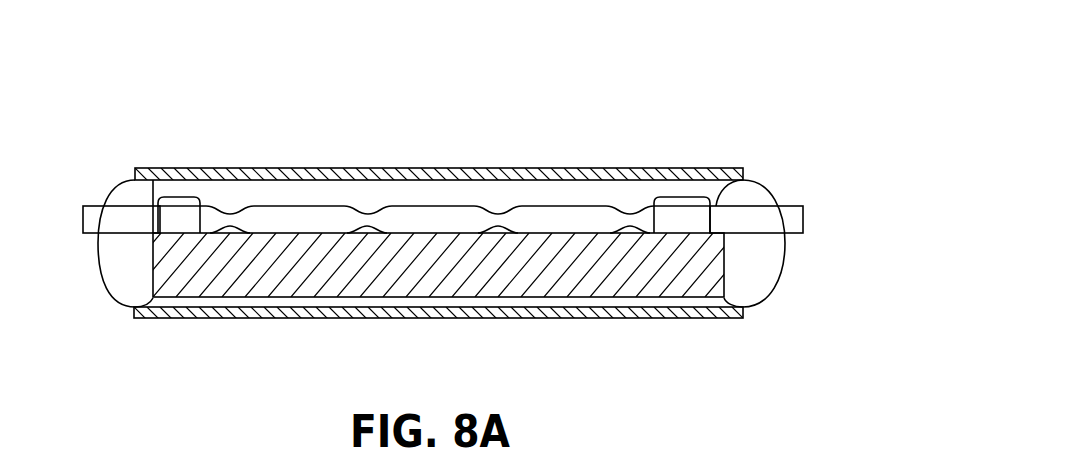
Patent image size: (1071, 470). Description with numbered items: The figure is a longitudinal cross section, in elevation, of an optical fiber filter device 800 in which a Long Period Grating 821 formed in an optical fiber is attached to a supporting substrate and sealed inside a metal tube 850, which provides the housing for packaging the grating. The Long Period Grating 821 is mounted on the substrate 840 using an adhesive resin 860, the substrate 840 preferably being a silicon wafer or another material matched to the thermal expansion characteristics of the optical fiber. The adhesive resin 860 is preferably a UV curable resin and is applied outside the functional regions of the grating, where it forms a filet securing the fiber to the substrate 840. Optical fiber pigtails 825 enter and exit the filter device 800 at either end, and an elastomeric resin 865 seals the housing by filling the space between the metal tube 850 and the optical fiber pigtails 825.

The filter device 800 is at (572, 80).
The Long Period Grating 821 is at (427, 215).
The optical fiber pigtails 825 is at (82, 207).
The substrate 840 is at (287, 299).
The metal tube 850 is at (578, 320).
The adhesive resin 860 is at (182, 196).
The elastomeric resin 865 is at (112, 297).